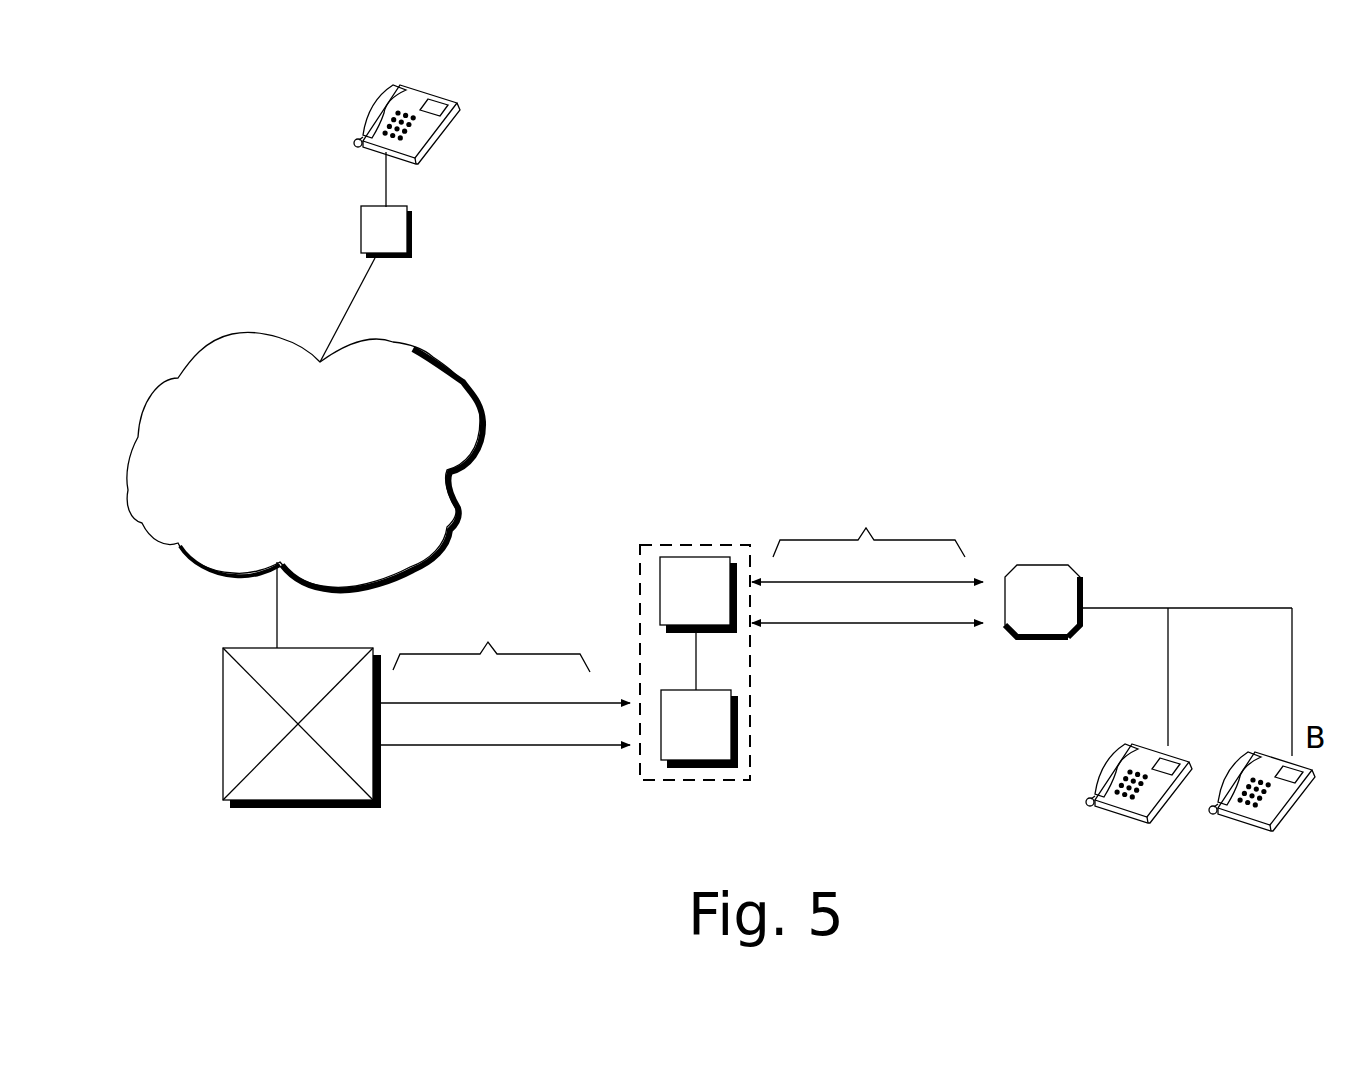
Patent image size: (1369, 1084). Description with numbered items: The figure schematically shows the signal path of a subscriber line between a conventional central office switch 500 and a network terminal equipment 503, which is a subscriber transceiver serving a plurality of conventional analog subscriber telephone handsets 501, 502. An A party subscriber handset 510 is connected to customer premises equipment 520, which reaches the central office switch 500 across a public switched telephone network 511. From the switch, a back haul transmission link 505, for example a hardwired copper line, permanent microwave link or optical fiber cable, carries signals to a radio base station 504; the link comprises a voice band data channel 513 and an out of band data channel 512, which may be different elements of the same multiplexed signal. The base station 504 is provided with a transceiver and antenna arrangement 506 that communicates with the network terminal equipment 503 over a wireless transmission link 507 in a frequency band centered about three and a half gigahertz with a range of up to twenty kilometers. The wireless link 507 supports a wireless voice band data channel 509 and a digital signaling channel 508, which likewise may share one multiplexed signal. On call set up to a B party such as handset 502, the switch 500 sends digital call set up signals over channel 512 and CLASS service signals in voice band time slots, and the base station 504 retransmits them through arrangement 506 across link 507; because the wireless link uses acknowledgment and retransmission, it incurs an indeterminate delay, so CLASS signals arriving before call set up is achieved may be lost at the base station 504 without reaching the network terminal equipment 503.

The central office switch 500 is at (300, 808).
The subscriber telephone handset 501 is at (1145, 818).
The subscriber telephone handset 502 is at (1270, 826).
The network terminal equipment 503 is at (1050, 565).
The radio base station 504 is at (698, 657).
The back haul transmission link 505 is at (491, 643).
The transceiver and antenna arrangement 506 is at (703, 556).
The wireless transmission link 507 is at (869, 527).
The digital signaling channel 508 is at (867, 643).
The wireless voice band data channel 509 is at (867, 564).
The A party subscriber handset 510 is at (447, 118).
The public switched telephone network 511 is at (462, 382).
The out of band data channel 512 is at (505, 763).
The voice band data channel 513 is at (505, 683).
The customer premises equipment 520 is at (412, 232).